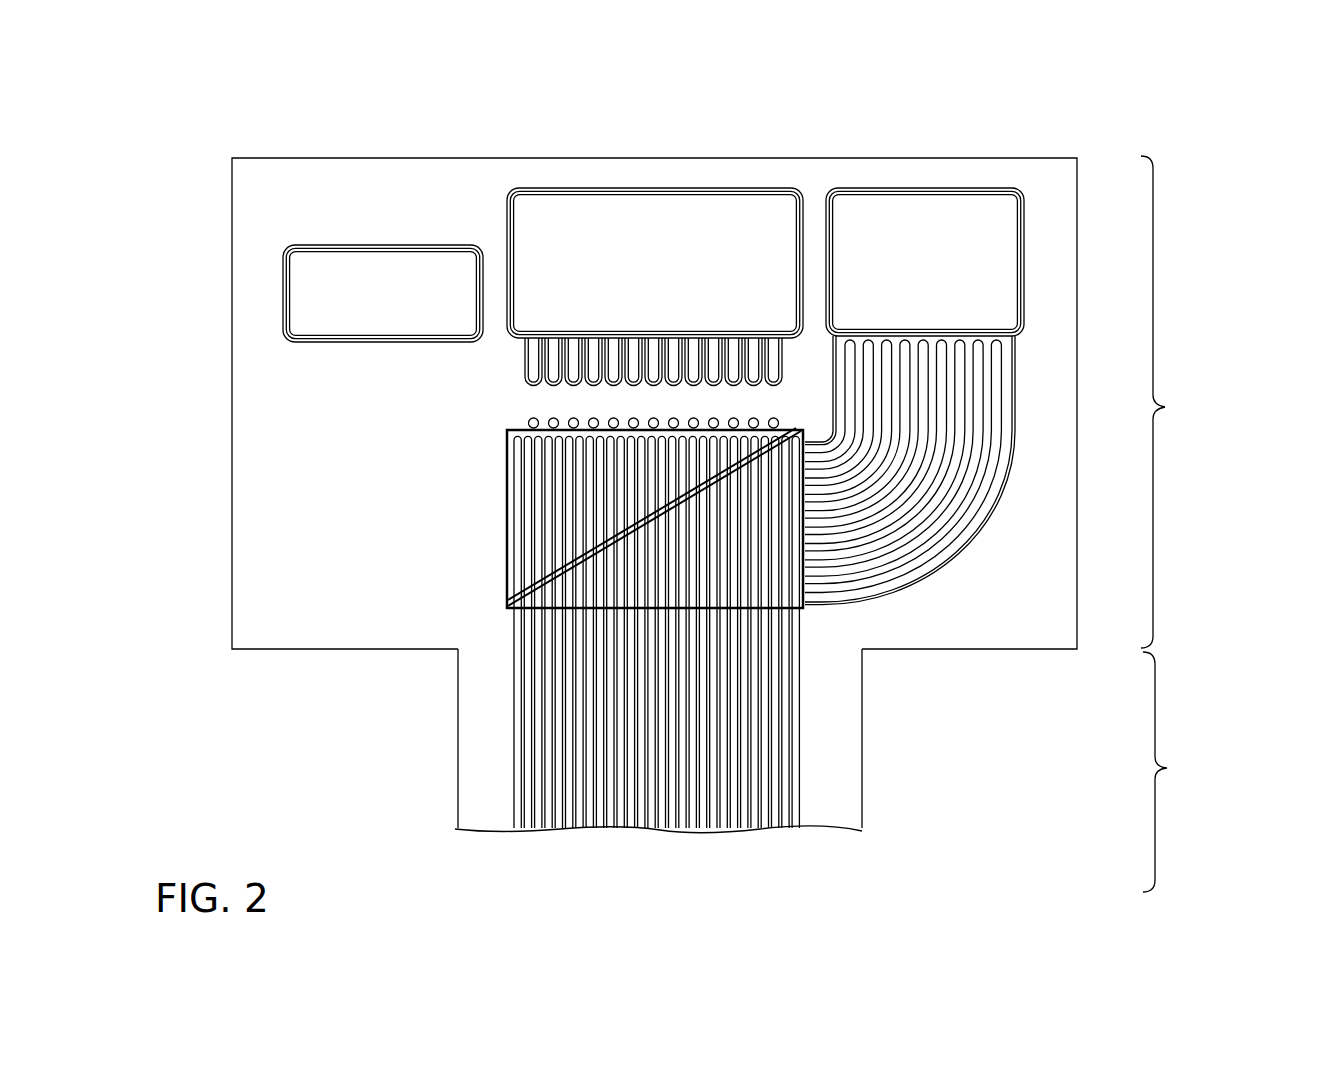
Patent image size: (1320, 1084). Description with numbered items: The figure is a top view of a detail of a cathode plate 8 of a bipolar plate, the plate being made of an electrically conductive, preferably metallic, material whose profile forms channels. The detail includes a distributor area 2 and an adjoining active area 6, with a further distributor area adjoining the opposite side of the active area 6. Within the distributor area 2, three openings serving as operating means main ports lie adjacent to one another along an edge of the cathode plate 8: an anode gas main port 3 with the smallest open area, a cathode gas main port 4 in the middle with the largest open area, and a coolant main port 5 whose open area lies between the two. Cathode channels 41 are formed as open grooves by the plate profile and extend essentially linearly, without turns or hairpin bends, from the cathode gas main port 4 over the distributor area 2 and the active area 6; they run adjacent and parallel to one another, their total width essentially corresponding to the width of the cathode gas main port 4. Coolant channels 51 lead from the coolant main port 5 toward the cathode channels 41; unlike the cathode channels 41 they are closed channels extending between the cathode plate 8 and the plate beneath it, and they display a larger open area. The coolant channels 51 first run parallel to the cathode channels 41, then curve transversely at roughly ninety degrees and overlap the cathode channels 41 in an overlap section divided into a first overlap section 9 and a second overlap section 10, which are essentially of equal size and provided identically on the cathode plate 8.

The distributor area 2 is at (712, 402).
The anode gas main port 3 is at (424, 262).
The cathode gas main port 4 is at (636, 213).
The coolant main port 5 is at (874, 212).
The active area 6 is at (824, 770).
The cathode plate 8 is at (743, 519).
The first overlap section 9 is at (800, 610).
The second overlap section 10 is at (506, 580).
The cathode channels 41 is at (790, 742).
The coolant channels 51 is at (1005, 385).